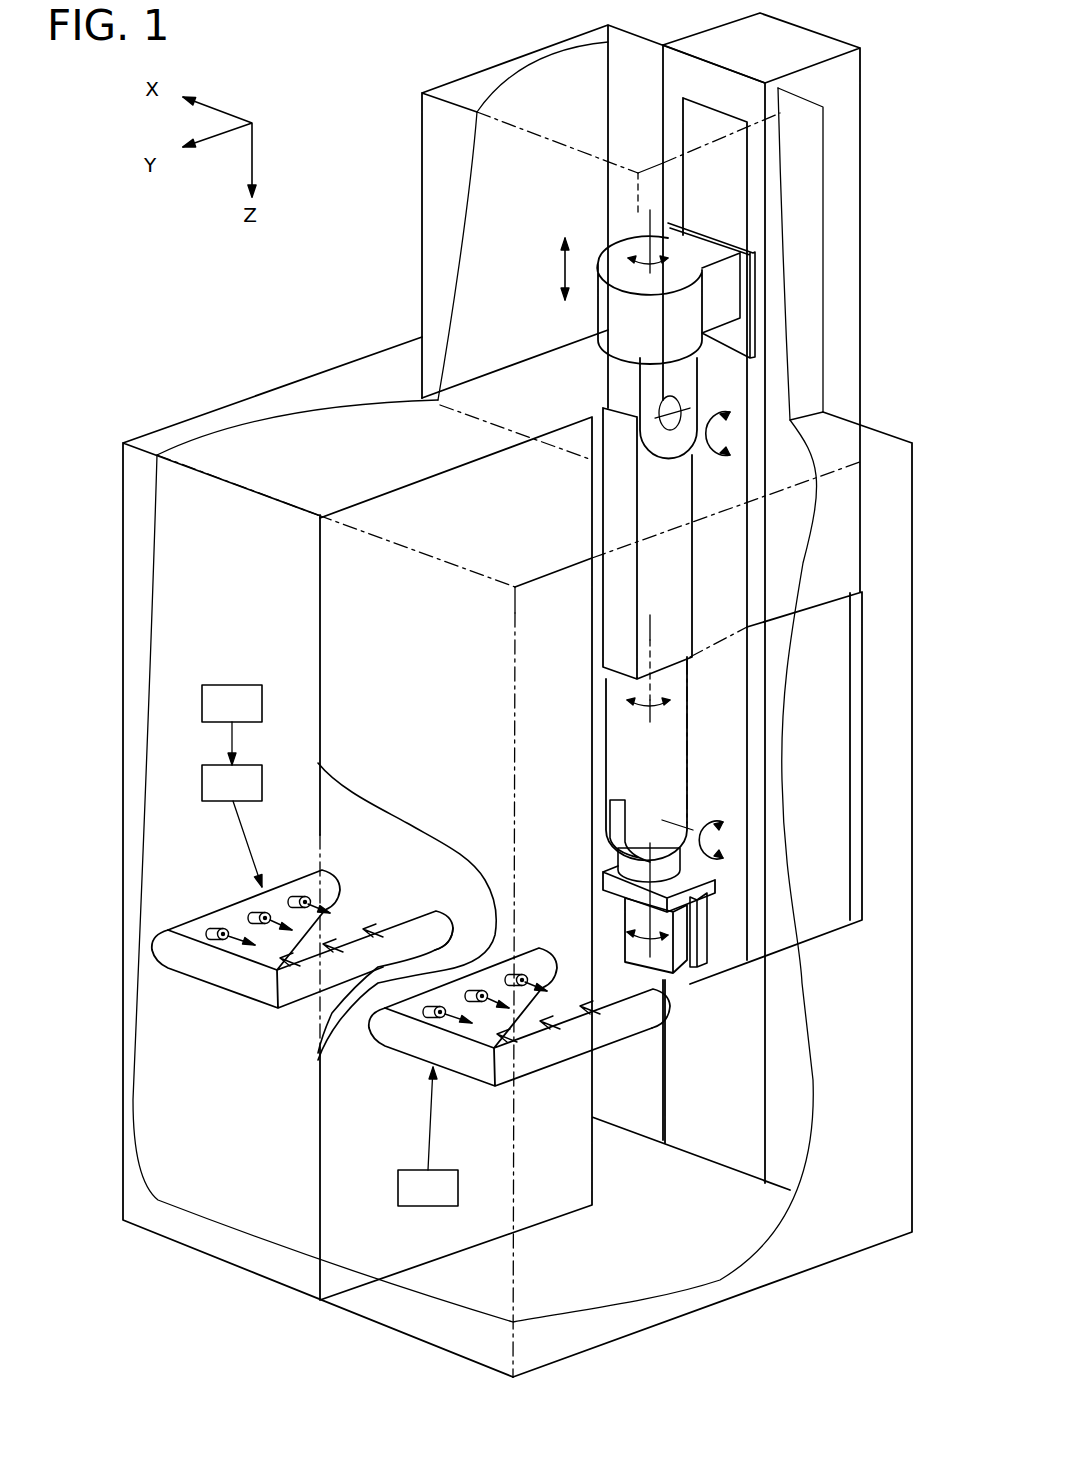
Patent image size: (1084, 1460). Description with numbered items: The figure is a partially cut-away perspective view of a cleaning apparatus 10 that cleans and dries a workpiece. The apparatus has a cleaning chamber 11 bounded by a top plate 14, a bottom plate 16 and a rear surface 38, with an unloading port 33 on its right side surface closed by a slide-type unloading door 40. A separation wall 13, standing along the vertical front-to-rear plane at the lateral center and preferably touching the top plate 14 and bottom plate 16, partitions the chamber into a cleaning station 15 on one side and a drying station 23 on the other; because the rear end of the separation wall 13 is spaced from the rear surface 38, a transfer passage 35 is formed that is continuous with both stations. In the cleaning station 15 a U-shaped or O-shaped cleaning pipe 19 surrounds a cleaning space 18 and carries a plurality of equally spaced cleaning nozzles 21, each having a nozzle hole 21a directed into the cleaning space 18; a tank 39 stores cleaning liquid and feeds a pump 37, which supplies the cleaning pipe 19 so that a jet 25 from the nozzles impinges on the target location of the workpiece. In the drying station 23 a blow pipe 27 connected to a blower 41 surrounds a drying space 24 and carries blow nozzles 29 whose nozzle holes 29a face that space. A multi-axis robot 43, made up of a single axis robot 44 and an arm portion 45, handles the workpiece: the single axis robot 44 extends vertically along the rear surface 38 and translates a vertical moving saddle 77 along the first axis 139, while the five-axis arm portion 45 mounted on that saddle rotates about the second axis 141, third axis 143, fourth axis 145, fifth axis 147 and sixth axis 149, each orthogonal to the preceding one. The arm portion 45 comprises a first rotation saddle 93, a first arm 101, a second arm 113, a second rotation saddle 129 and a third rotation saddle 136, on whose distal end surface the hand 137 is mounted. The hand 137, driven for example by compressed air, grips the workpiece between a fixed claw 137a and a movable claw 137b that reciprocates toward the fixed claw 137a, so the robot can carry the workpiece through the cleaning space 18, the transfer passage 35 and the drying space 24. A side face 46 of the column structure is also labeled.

The cleaning apparatus 10 is at (913, 36).
The cleaning chamber 11 is at (123, 618).
The separation wall 13 is at (318, 572).
The top plate 14 is at (355, 378).
The cleaning station 15 is at (225, 450).
The bottom plate 16 is at (722, 1245).
The cleaning space 18 is at (345, 918).
The cleaning pipe 19 is at (240, 997).
The cleaning nozzle 21 is at (222, 928).
The nozzle hole 21a is at (317, 897).
The drying station 23 is at (433, 497).
The drying space 24 is at (552, 1007).
The jet 25 is at (377, 932).
The blow pipe 27 is at (403, 1058).
The blow nozzle 29 is at (552, 977).
The nozzle hole 29a is at (515, 978).
The unloading port 33 is at (820, 616).
The transfer passage 35 is at (588, 372).
The pump 37 is at (263, 770).
The rear surface 38 is at (604, 95).
The tank 39 is at (263, 693).
The unloading door 40 is at (850, 706).
The blower 41 is at (398, 1202).
The multi-axis robot 43 is at (565, 592).
The single axis robot 44 is at (870, 114).
The arm portion 45 is at (573, 543).
The column side face 46 is at (862, 186).
The vertical moving saddle 77 is at (685, 240).
The first rotation saddle 93 is at (706, 406).
The first arm 101 is at (603, 650).
The second arm 113 is at (603, 737).
The second rotation saddle 129 is at (615, 822).
The third rotation saddle 136 is at (618, 864).
The hand 137 is at (848, 990).
The fixed claw 137a is at (710, 940).
The movable claw 137b is at (690, 975).
The first axis 139 is at (560, 278).
The second axis 141 is at (648, 248).
The third axis 143 is at (706, 440).
The fourth axis 145 is at (650, 628).
The fifth axis 147 is at (697, 828).
The sixth axis 149 is at (647, 915).